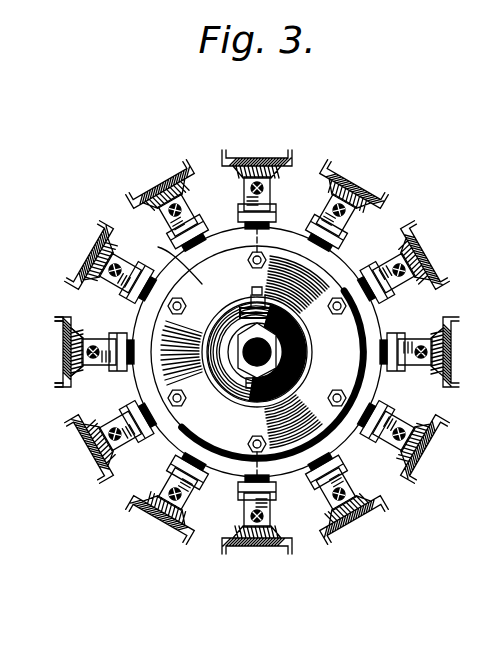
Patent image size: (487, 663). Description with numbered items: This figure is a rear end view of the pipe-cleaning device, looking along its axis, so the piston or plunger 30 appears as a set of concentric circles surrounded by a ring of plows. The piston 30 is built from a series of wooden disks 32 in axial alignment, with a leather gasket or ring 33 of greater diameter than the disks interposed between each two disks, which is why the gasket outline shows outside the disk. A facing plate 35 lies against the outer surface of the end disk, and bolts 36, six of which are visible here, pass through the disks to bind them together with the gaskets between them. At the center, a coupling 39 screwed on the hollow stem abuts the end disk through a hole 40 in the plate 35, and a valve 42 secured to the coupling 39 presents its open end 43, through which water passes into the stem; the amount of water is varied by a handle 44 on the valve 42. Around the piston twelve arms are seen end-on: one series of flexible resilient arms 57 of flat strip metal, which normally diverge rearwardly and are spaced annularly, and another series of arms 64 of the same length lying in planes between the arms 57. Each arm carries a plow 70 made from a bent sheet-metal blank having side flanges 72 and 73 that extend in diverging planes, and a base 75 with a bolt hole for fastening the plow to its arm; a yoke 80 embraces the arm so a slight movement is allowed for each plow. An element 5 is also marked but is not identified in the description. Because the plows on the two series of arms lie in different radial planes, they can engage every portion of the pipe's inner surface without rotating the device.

The wheel 5 is at (282, 477).
The piston or plunger 30 is at (245, 352).
The wooden disks 32 is at (300, 368).
The leather gasket or ring 33 is at (386, 313).
The facing plate 35 is at (168, 259).
The bolts 36 is at (334, 400).
The coupling 39 is at (235, 349).
The hole 40 is at (229, 304).
The valve 42 is at (296, 333).
The open end 43 is at (277, 349).
The handle 44 is at (252, 290).
The flexible resilient arms 57 is at (355, 484).
The arms 64 is at (253, 514).
The plows 70 is at (256, 160).
The side flange 72 is at (62, 320).
The side flange 73 is at (63, 385).
The base 75 is at (76, 334).
The yoke 80 is at (393, 411).